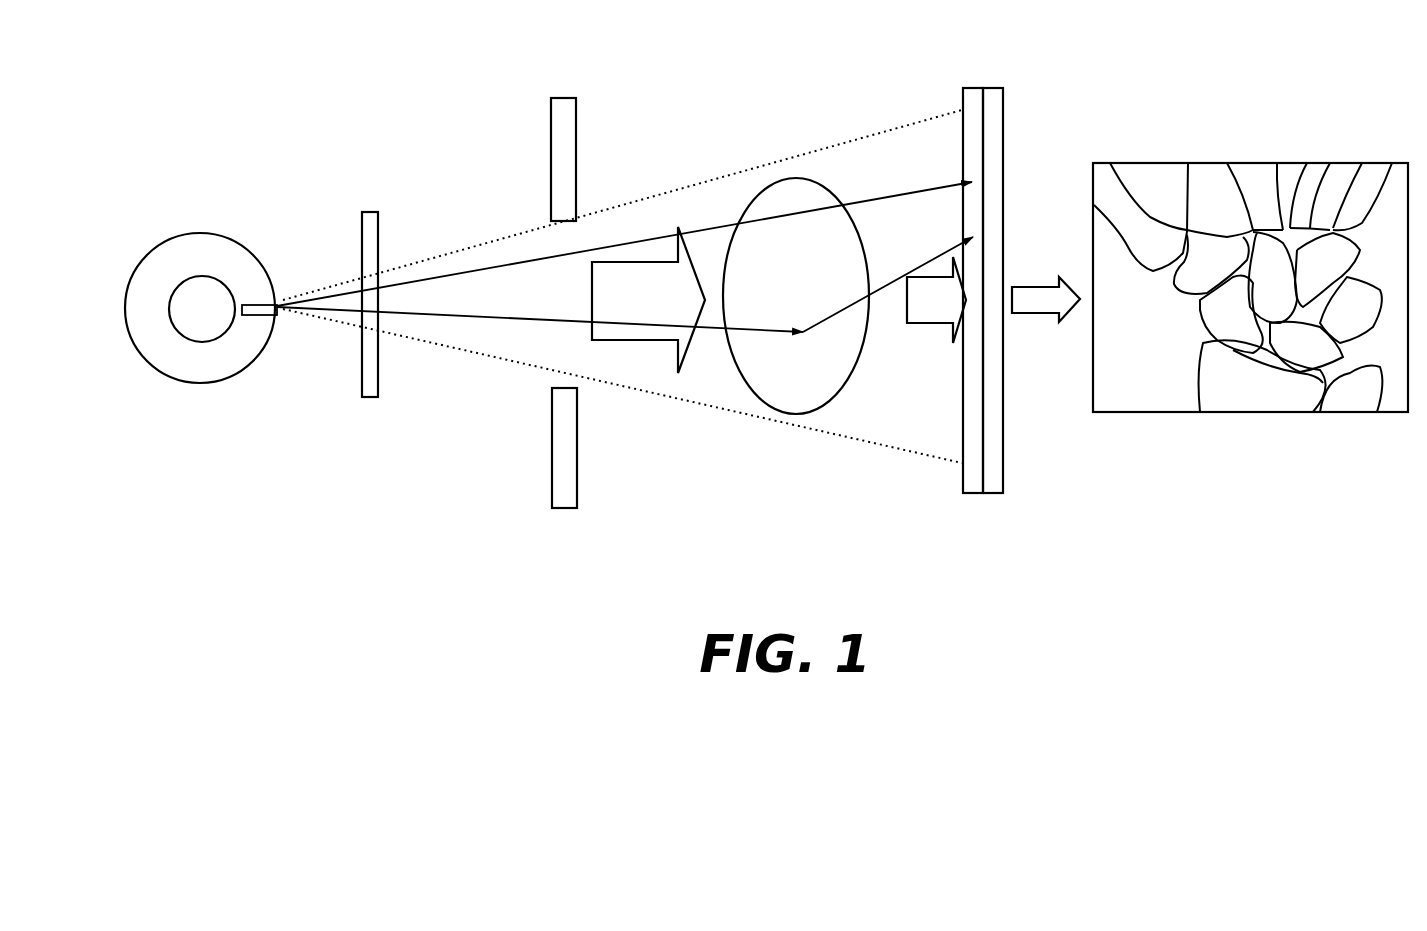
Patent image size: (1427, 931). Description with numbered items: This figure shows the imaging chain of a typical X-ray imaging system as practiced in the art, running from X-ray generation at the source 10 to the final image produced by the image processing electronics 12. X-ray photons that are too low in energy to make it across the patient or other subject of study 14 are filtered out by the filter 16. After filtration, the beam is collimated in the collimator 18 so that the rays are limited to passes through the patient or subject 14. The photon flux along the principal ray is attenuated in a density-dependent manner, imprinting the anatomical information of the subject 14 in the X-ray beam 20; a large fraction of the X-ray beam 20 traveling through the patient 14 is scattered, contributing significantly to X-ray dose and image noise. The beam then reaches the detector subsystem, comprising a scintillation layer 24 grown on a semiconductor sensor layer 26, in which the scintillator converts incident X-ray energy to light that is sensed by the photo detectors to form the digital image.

The source 10 is at (198, 276).
The image processing electronics 12 is at (1147, 412).
The patient or other subject of study 14 is at (843, 395).
The filter 16 is at (378, 368).
The collimator 18 is at (577, 490).
The X-ray beam 20 is at (490, 292).
The scintillation layer 24 is at (970, 88).
The semiconductor sensor layer 26 is at (990, 88).